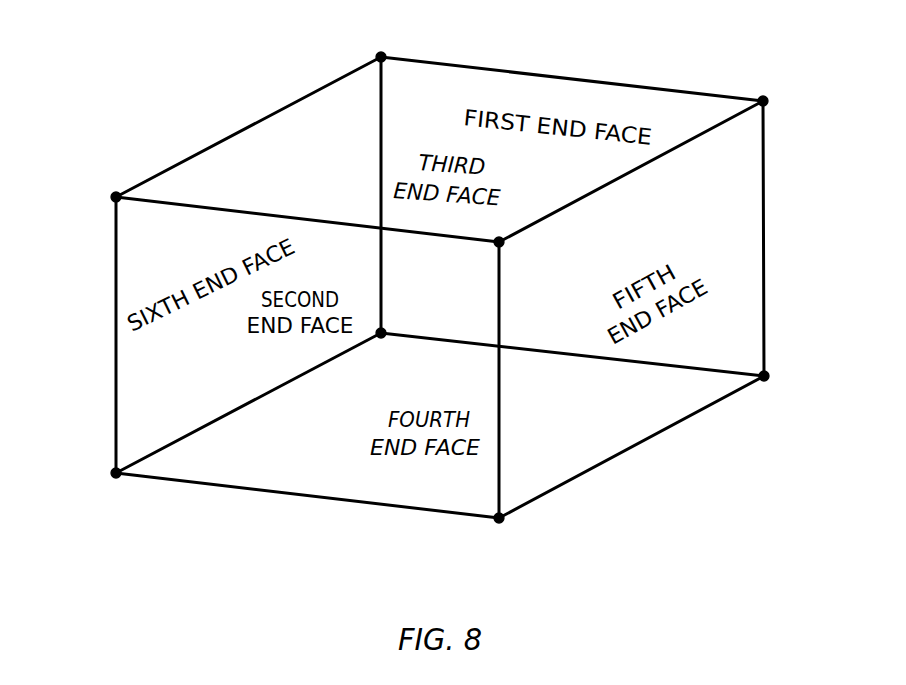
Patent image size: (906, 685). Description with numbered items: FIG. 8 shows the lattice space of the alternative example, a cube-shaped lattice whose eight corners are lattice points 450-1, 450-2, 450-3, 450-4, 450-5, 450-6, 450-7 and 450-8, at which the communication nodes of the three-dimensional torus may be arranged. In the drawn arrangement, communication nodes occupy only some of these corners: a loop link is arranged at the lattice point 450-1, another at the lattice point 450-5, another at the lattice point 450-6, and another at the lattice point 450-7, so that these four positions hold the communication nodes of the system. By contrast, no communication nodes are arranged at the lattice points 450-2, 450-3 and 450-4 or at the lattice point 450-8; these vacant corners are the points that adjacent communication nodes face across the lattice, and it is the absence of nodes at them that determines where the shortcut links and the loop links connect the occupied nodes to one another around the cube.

The lattice point 450-1 is at (381, 57).
The lattice point 450-2 is at (763, 101).
The lattice point 450-3 is at (116, 197).
The lattice point 450-4 is at (499, 242).
The lattice point 450-5 is at (381, 333).
The lattice point 450-6 is at (764, 376).
The lattice point 450-7 is at (116, 473).
The lattice point 450-8 is at (499, 518).